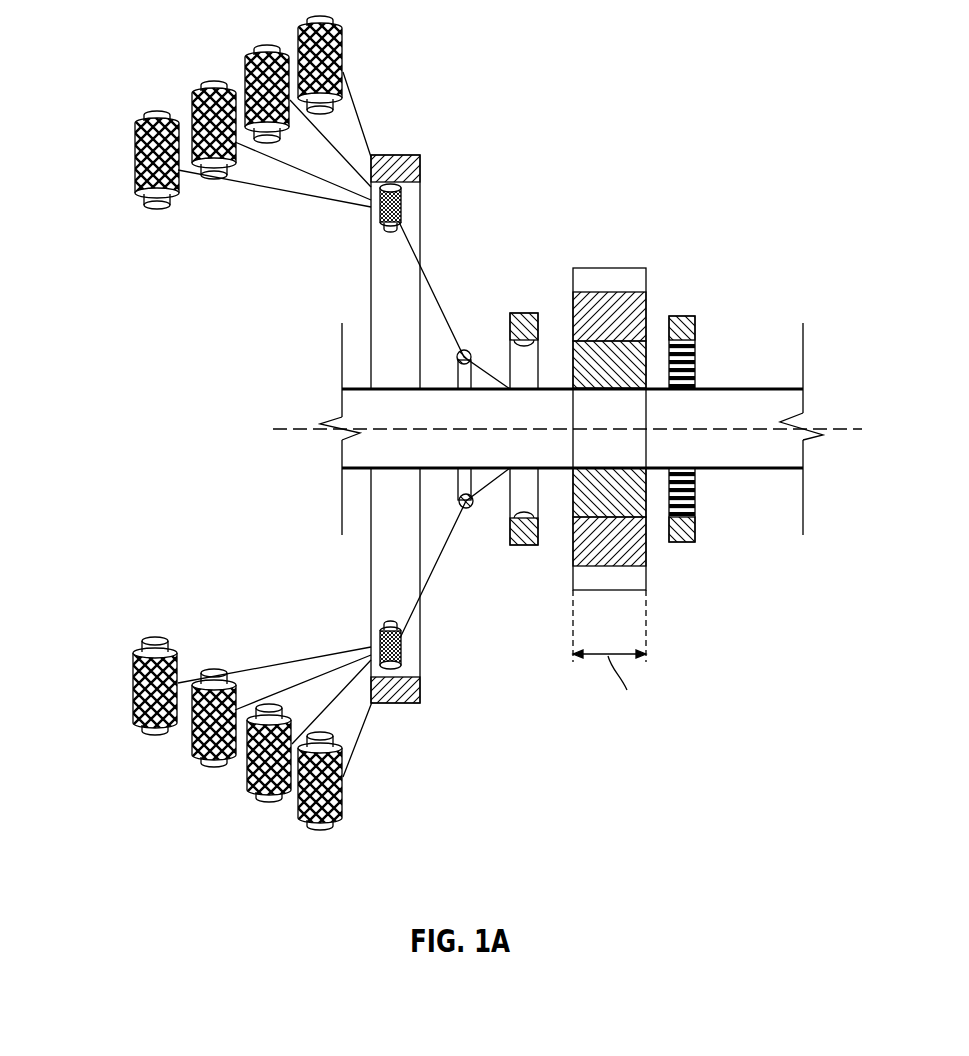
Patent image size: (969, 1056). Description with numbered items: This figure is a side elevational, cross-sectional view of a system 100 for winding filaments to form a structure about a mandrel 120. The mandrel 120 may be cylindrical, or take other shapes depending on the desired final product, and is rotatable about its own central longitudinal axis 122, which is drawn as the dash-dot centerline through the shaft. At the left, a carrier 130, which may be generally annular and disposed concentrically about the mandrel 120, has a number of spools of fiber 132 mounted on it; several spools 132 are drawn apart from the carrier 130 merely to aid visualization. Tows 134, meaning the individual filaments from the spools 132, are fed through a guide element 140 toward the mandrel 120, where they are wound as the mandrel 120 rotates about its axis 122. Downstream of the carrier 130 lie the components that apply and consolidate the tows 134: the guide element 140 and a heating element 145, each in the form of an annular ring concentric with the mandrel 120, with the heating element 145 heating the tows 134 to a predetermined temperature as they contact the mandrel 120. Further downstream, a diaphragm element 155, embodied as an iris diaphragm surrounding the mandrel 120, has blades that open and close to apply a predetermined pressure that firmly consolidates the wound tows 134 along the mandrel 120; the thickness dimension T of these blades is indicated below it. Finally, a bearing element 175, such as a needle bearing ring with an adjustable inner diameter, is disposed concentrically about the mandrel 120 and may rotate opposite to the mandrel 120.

The system 100 is at (273, 835).
The mandrel 120 is at (736, 388).
The central longitudinal axis 122 is at (854, 426).
The carrier 130 is at (421, 167).
The spools of fiber 132 is at (134, 165).
The tows 134 is at (417, 258).
The guide element 140 is at (469, 350).
The heating element 145 is at (527, 313).
The diaphragm element 155 is at (605, 310).
The bearing element 175 is at (683, 316).